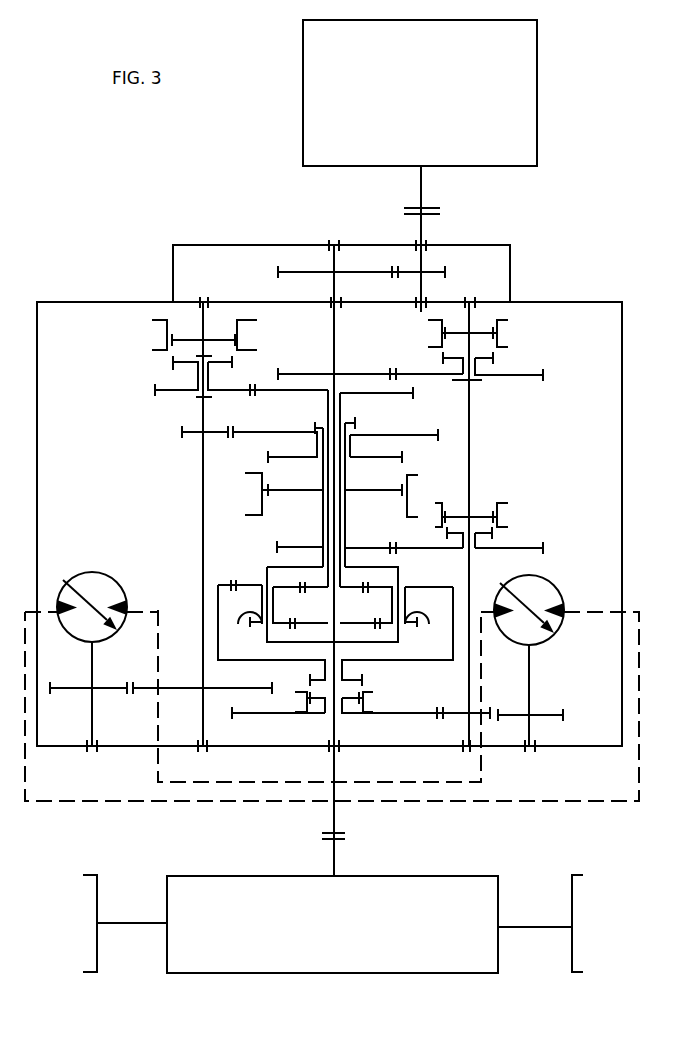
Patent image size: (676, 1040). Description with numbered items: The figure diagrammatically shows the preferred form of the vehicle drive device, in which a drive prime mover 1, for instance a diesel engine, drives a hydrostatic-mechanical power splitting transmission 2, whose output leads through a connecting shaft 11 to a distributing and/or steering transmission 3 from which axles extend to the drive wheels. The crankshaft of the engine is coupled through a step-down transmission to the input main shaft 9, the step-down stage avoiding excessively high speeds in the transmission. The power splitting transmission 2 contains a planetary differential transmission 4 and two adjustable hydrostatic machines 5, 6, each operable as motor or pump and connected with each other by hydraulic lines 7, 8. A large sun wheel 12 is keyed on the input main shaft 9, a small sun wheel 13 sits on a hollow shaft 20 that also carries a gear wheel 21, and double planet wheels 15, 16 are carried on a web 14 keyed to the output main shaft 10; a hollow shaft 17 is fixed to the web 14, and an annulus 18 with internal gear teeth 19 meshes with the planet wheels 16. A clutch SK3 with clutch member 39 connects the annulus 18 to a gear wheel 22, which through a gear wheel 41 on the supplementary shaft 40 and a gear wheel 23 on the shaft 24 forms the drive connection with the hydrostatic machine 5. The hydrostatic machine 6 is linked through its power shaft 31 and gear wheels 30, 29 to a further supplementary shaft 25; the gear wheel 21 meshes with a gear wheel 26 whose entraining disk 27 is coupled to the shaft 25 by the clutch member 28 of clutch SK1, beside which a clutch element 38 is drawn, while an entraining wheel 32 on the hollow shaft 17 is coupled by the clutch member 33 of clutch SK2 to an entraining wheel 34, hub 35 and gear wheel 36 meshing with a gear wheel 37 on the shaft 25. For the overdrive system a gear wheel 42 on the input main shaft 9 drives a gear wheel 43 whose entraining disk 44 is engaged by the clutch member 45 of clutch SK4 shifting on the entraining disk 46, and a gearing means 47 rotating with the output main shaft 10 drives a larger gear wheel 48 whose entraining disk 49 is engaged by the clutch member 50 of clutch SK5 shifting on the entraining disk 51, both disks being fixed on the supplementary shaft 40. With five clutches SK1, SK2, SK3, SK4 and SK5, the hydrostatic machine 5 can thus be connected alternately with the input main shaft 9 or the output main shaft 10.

The drive prime mover 1 is at (527, 91).
The hydrostatic-mechanical power splitting transmission 2 is at (572, 461).
The distributing and/or steering transmission 3 is at (335, 962).
The planetary differential transmission 4 is at (315, 595).
The hydrostatic machine 5 is at (540, 588).
The hydrostatic machine 6 is at (100, 585).
The hydraulic line 7 is at (95, 798).
The hydraulic line 8 is at (157, 760).
The input main shaft 9 is at (332, 335).
The output main shaft 10 is at (338, 764).
The connecting shaft 11 is at (338, 848).
The large sun wheel 12 is at (313, 620).
The small sun wheel 13 is at (348, 588).
The web 14 is at (398, 637).
The double planet wheel 15 is at (240, 610).
The double planet wheel 16 is at (250, 583).
The hollow shaft 17 is at (321, 498).
The annulus 18 is at (218, 620).
The internal gear teeth 19 is at (233, 580).
The hollow shaft 20 is at (342, 407).
The gear wheel 21 is at (278, 389).
The gear wheel 22 is at (250, 720).
The gear wheel 23 is at (540, 715).
The shaft of hydrostatic machine 24 is at (532, 668).
The supplementary shaft 25 is at (201, 519).
The gear wheel 26 is at (163, 395).
The entraining disk 27 is at (170, 365).
The clutch member 28 is at (257, 335).
The gear wheel 29 is at (180, 690).
The gear wheel 30 is at (110, 690).
The power shaft 31 is at (95, 662).
The entraining wheel 32 is at (367, 493).
The clutch member 33 is at (260, 500).
The entraining wheel 34 is at (368, 458).
The hub 35 is at (350, 453).
The gear wheel 36 is at (250, 434).
The gear wheel 37 is at (182, 437).
The clutch gear 38 is at (190, 335).
The clutch member 39 is at (298, 702).
The supplementary shaft 40 is at (472, 420).
The gear wheel 41 is at (458, 720).
The gear wheel 42 is at (350, 372).
The gear wheel 43 is at (520, 378).
The entraining disk 44 is at (442, 358).
The clutch member 45 is at (430, 333).
The entraining disk 46 is at (482, 333).
The gearing means 47 is at (277, 545).
The gear wheel 48 is at (507, 550).
The entraining disk 49 is at (482, 538).
The clutch member 50 is at (435, 520).
The entraining disk 51 is at (480, 513).
The clutch SK1 is at (156, 332).
The clutch SK2 is at (452, 476).
The clutch SK3 is at (376, 704).
The clutch SK4 is at (514, 332).
The clutch SK5 is at (514, 516).